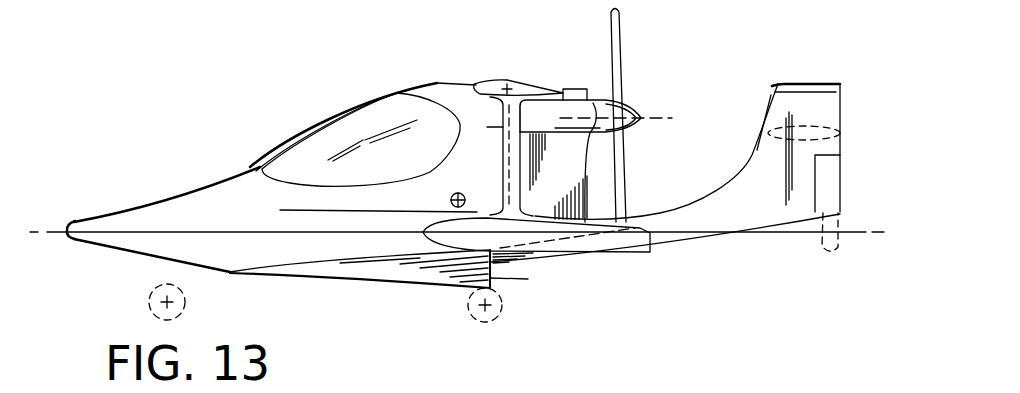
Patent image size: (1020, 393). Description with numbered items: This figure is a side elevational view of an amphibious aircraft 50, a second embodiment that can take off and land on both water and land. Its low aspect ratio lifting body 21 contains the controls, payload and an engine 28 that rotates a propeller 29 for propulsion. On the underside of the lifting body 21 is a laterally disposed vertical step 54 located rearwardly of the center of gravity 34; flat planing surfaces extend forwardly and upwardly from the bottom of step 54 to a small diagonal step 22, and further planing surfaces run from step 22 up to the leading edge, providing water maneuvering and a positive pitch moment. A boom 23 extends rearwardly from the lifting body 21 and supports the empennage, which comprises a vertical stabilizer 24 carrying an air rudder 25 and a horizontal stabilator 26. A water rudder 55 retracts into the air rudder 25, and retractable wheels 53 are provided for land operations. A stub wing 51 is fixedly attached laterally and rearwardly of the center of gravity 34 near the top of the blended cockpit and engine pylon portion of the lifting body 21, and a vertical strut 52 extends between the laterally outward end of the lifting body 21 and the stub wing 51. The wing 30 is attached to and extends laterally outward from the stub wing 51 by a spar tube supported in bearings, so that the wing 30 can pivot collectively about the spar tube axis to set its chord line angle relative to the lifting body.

The amphibious aircraft 50 is at (212, 118).
The lifting body 21 is at (416, 159).
The step 22 is at (347, 262).
The boom 23 is at (708, 236).
The vertical stabilizer 24 is at (785, 188).
The rudder 25 is at (833, 185).
The horizontal stabilator 26 is at (805, 131).
The engine 28 is at (592, 133).
The propeller 29 is at (622, 53).
The wing 30 is at (526, 82).
The center of gravity 34 is at (450, 200).
The stub wing 51 is at (492, 80).
The vertical strut 52 is at (503, 156).
The retractable wheel 53 is at (187, 299).
The vertical step 54 is at (493, 287).
The water rudder 55 is at (822, 246).